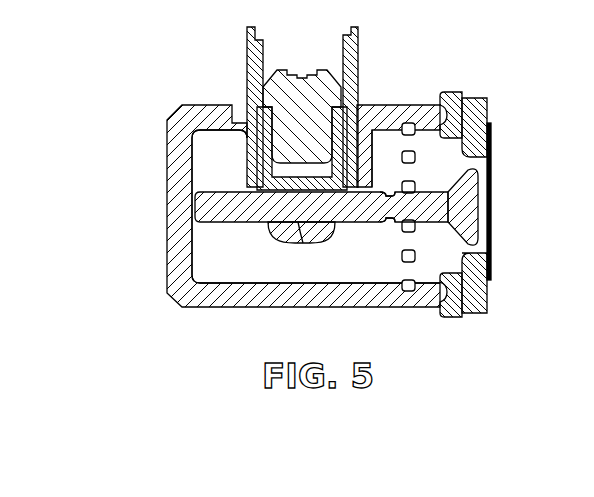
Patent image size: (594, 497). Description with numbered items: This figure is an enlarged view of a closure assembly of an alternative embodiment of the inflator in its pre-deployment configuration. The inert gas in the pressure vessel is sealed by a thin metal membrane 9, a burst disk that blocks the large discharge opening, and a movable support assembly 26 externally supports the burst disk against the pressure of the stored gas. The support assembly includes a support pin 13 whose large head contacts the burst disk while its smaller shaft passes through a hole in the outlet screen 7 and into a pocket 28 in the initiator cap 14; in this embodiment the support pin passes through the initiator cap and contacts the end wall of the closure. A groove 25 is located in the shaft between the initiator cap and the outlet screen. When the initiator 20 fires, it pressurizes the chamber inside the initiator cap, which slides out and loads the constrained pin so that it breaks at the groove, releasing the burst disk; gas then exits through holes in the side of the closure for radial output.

The outlet screen 7 is at (387, 153).
The thin metal membrane 9 is at (491, 175).
The support pin 13 is at (290, 248).
The initiator cap 14 is at (218, 205).
The initiator 20 is at (243, 83).
The groove 25 is at (388, 220).
The movable support assembly 26 is at (283, 262).
The pocket 28 is at (303, 243).